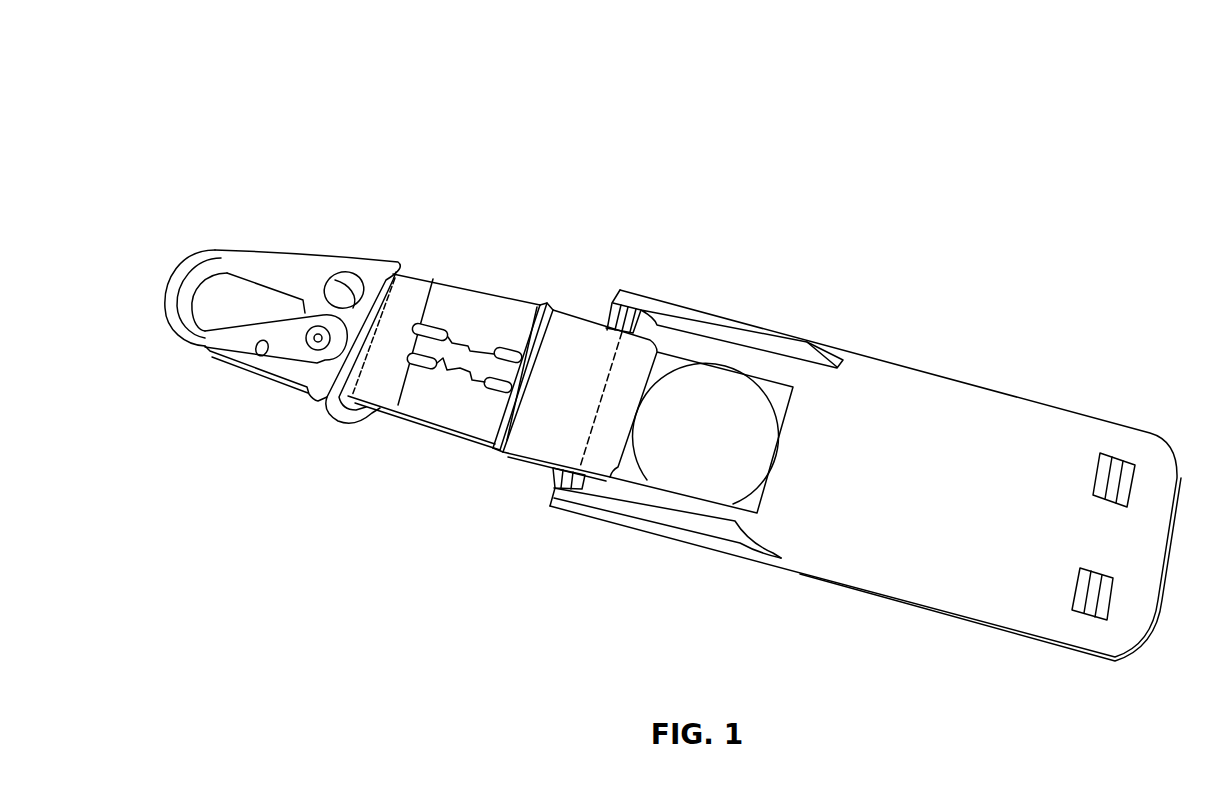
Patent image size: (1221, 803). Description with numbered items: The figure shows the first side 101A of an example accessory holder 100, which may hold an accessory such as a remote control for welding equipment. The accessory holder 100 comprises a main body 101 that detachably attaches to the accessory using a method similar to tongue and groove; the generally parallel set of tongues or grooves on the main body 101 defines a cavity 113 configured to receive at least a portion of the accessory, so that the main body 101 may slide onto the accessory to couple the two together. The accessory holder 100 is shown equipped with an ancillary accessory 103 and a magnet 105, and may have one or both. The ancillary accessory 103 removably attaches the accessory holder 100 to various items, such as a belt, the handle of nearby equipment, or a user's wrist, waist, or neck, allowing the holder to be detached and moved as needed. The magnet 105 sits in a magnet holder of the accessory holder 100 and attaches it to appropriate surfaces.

The accessory holder 100 is at (181, 88).
The main body 101 is at (615, 282).
The first side 101A is at (910, 560).
The ancillary accessory 103 is at (175, 562).
The magnet 105 is at (678, 462).
The cavity 113 is at (845, 378).